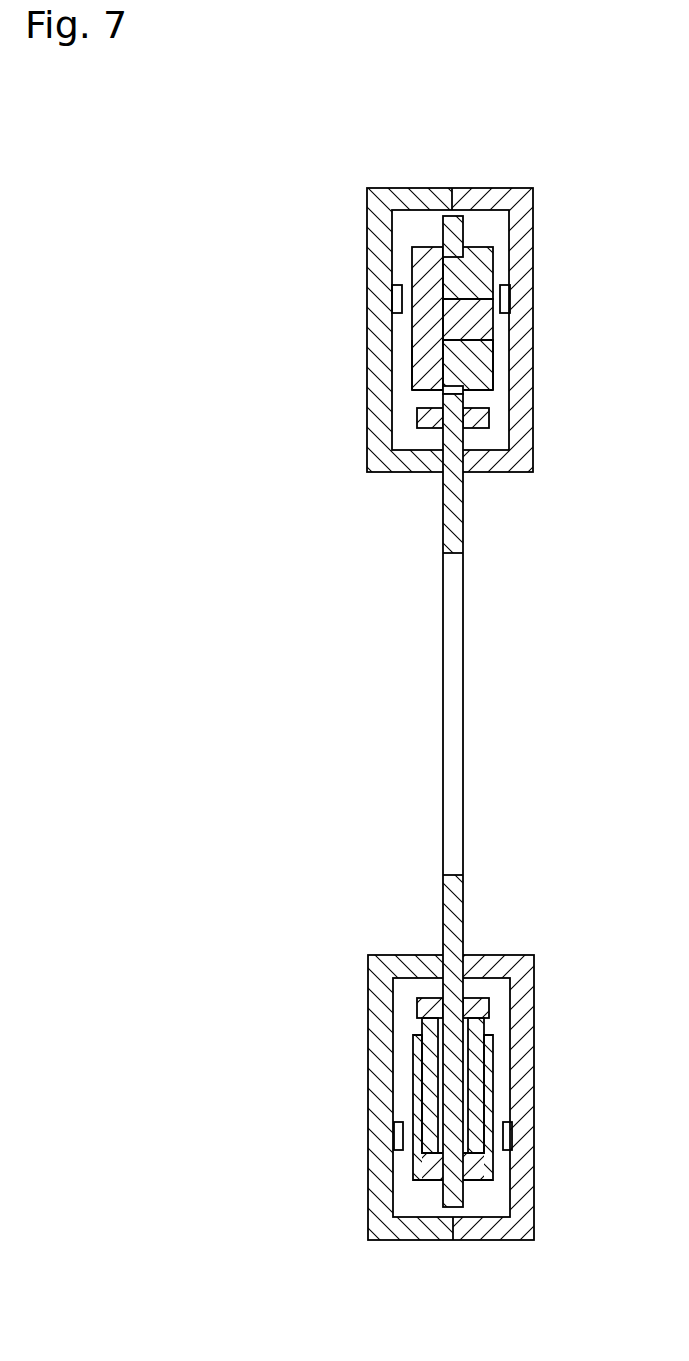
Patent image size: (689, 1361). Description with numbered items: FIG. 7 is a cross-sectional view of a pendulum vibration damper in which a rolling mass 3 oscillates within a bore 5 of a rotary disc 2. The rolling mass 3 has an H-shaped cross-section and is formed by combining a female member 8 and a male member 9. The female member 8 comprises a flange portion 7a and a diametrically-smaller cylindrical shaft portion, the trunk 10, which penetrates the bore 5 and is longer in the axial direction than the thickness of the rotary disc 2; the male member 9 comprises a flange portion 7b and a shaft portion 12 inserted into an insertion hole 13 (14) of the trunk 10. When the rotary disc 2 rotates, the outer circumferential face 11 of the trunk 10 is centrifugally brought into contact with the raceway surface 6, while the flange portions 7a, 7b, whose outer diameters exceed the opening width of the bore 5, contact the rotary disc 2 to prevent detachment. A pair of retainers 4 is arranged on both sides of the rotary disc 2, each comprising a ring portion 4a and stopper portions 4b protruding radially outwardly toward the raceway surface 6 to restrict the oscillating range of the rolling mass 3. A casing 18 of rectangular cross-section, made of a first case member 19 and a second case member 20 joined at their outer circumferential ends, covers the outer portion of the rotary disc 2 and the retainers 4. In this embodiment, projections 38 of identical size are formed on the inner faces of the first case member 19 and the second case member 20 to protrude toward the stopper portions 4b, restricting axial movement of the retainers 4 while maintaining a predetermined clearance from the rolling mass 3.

The rotary disc 2 is at (456, 519).
The rolling mass 3 is at (490, 238).
The retainer 4 is at (428, 430).
The ring portion 4a is at (425, 1012).
The stopper portion 4b is at (428, 1027).
The bore 5 is at (416, 393).
The raceway surface 6 is at (448, 266).
The flange portion 7a is at (484, 381).
The flange portion 7b is at (414, 378).
The female member 8 is at (528, 363).
The male member 9 is at (363, 320).
The trunk 10 is at (479, 353).
The outer circumferential face 11 is at (452, 394).
The shaft portion 12 is at (430, 326).
The insertion hole 13 is at (500, 325).
The middle block (alternate) 14 is at (540, 319).
The casing 18 is at (451, 712).
The first case member 19 is at (436, 200).
The second case member 20 is at (481, 713).
The projection 38 is at (396, 306).